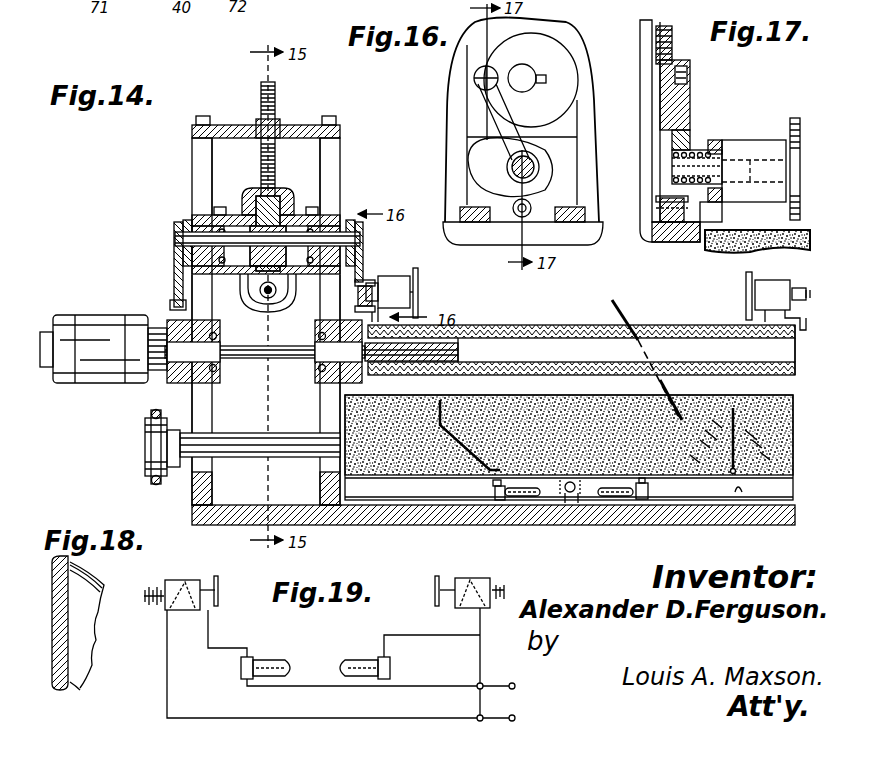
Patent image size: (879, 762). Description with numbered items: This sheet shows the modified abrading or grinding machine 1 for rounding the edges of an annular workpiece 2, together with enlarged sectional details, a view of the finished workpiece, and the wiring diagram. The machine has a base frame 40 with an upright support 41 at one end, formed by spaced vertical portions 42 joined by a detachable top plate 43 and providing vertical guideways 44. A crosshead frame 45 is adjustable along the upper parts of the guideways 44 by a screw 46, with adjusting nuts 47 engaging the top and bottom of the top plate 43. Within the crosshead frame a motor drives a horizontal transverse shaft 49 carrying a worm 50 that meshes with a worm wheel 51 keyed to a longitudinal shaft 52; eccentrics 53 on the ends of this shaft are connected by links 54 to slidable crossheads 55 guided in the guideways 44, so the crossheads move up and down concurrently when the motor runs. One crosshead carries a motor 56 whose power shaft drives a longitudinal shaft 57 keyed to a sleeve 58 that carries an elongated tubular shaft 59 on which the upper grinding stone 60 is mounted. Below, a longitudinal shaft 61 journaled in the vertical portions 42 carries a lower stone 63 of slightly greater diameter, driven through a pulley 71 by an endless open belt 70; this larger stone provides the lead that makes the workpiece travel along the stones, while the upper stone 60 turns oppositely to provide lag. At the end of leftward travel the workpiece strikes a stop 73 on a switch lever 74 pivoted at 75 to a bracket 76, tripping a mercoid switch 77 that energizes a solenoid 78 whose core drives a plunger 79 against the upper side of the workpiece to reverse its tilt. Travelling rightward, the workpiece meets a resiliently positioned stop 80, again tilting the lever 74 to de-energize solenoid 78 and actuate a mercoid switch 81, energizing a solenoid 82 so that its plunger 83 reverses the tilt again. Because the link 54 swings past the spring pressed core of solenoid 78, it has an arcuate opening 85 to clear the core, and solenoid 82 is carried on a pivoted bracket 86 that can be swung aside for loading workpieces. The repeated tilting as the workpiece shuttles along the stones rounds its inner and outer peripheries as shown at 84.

In FIG. 14, the abrading or grinding machine 1 is at (190, 152).
In FIG. 14, the workpiece 2 is at (647, 350).
In FIG. 18, the workpiece 2 is at (90, 628).
In FIG. 14, the base frame 40 is at (500, 520).
In FIG. 14, the upright support 41 is at (340, 150).
In FIG. 16, the upright support 41 is at (450, 115).
In FIG. 17, the upright support 41 is at (656, 24).
In FIG. 14, the spaced vertical portions 42 is at (192, 162).
In FIG. 16, the spaced vertical portions 42 is at (572, 92).
In FIG. 17, the spaced vertical portions 42 is at (650, 30).
In FIG. 14, the top plate 43 is at (222, 125).
In FIG. 14, the vertical guideways 44 is at (200, 184).
In FIG. 16, the vertical guideways 44 is at (576, 146).
In FIG. 14, the crosshead frame 45 is at (296, 205).
In FIG. 16, the crosshead frame 45 is at (562, 120).
In FIG. 17, the crosshead frame 45 is at (656, 112).
In FIG. 14, the screw 46 is at (278, 108).
In FIG. 14, the adjusting nuts 47 is at (278, 122).
In FIG. 14, the horizontal transverse shaft 49 is at (262, 308).
In FIG. 14, the worm 50 is at (280, 294).
In FIG. 14, the worm wheel 51 is at (250, 212).
In FIG. 14, the longitudinal shaft 52 is at (178, 246).
In FIG. 16, the longitudinal shaft 52 is at (474, 80).
In FIG. 17, the longitudinal shaft 52 is at (675, 60).
In FIG. 14, the eccentrics 53 is at (184, 228).
In FIG. 16, the eccentrics 53 is at (555, 52).
In FIG. 17, the eccentrics 53 is at (676, 28).
In FIG. 14, the links 54 is at (175, 282).
In FIG. 16, the links 54 is at (492, 147).
In FIG. 17, the links 54 is at (692, 146).
In FIG. 14, the slidable crossheads 55 is at (178, 380).
In FIG. 17, the slidable crossheads 55 is at (672, 246).
In FIG. 14, the motor 56 is at (100, 372).
In FIG. 14, the longitudinal shaft 57 is at (280, 352).
In FIG. 14, the sleeve 58 is at (455, 325).
In FIG. 14, the tubular shaft 59 is at (676, 326).
In FIG. 14, the upper abrading or grinding stone 60 is at (566, 325).
In FIG. 17, the upper abrading or grinding stone 60 is at (784, 252).
In FIG. 14, the longitudinal shaft 61 is at (262, 448).
In FIG. 14, the lower abrading or grinding stone 63 is at (600, 412).
In FIG. 14, the endless open belt 70 is at (148, 478).
In FIG. 14, the pulley 71 is at (146, 440).
In FIG. 14, the stop 73 is at (430, 485).
In FIG. 14, the switch lever 74 is at (736, 492).
In FIG. 14, the pivot 75 is at (562, 492).
In FIG. 14, the bracket 76 is at (578, 498).
In FIG. 14, the mercoid switch 77 is at (500, 492).
In FIG. 19, the mercoid switch 77 is at (272, 665).
In FIG. 14, the solenoid 78 is at (396, 278).
In FIG. 17, the solenoid 78 is at (736, 140).
In FIG. 19, the solenoid 78 is at (188, 585).
In FIG. 14, the plunger 79 is at (420, 287).
In FIG. 17, the plunger 79 is at (802, 118).
In FIG. 19, the plunger 79 is at (218, 590).
In FIG. 14, the resiliently positioned stop 80 is at (738, 410).
In FIG. 14, the mercoid switch 81 is at (634, 500).
In FIG. 19, the mercoid switch 81 is at (353, 665).
In FIG. 14, the solenoid 82 is at (755, 290).
In FIG. 19, the solenoid 82 is at (476, 582).
In FIG. 14, the plunger 83 is at (745, 312).
In FIG. 19, the plunger 83 is at (438, 590).
In FIG. 18, the rounded peripheries 84 is at (52, 560).
In FIG. 14, the opening 85 is at (358, 300).
In FIG. 16, the opening 85 is at (542, 166).
In FIG. 17, the opening 85 is at (694, 152).
In FIG. 14, the bracket 86 is at (792, 333).